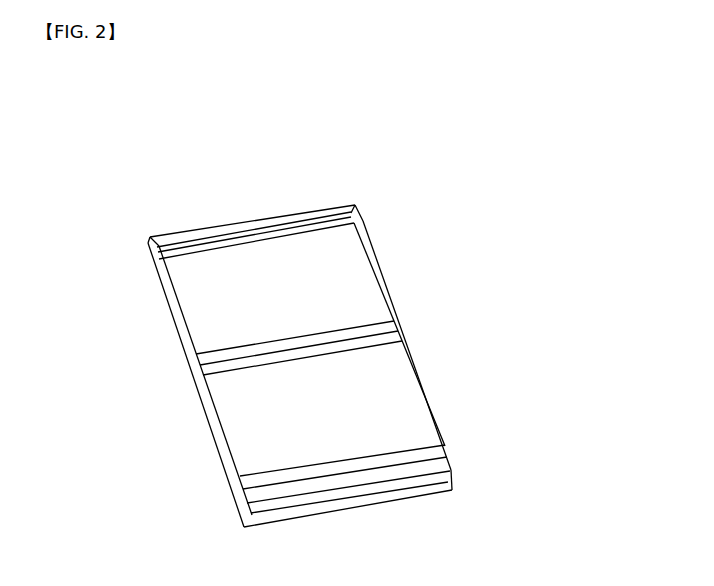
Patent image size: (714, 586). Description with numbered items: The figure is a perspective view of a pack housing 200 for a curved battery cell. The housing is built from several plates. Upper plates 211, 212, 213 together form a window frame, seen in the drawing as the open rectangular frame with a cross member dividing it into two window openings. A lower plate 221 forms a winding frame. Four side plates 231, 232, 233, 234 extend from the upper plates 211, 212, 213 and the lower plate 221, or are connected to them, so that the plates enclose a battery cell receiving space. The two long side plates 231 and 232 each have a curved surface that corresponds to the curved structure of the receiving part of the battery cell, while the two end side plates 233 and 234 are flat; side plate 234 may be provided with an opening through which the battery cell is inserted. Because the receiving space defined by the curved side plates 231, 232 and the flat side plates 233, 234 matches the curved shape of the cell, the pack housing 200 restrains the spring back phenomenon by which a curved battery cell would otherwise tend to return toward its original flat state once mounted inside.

The pack housing 200 is at (290, 337).
The upper plate 211 is at (257, 482).
The upper plate 212 is at (213, 353).
The upper plate 213 is at (178, 251).
The lower plate 221 is at (373, 343).
The side plate 231 is at (185, 337).
The side plate 232 is at (387, 293).
The side plate 233 is at (325, 213).
The side plate 234 is at (450, 469).